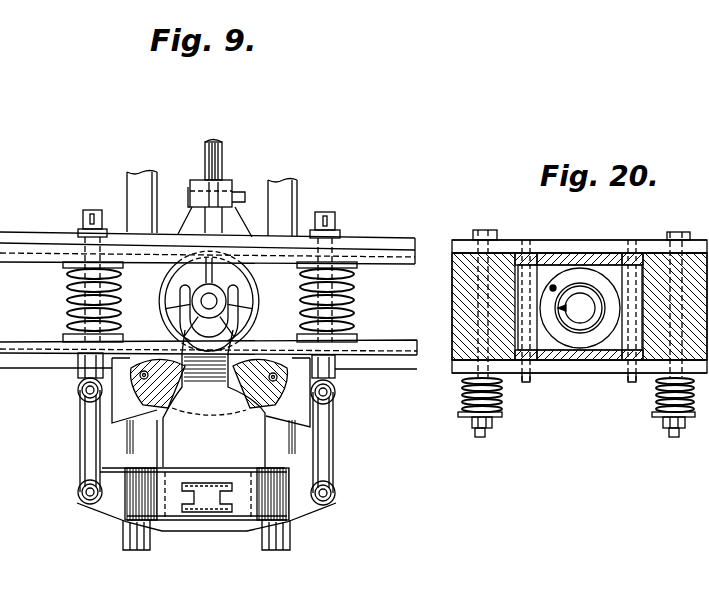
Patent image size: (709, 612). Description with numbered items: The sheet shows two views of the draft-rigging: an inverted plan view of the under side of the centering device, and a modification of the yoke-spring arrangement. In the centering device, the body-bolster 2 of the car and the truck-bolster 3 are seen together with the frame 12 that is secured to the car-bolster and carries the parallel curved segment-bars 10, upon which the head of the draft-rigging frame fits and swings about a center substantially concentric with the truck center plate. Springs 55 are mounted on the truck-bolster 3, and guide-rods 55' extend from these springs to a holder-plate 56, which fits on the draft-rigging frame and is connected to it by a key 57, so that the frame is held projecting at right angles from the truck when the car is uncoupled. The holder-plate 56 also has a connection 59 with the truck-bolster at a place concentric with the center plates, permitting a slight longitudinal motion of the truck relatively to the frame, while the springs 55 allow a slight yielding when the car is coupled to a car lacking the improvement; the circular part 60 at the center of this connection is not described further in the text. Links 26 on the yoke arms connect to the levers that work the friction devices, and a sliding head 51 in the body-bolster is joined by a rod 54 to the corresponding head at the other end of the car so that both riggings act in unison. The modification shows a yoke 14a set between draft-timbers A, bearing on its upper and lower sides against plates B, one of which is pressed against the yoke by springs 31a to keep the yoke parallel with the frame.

In FIG. 9, the sliding head 51 is at (183, 226).
In FIG. 9, the rod 54 is at (222, 163).
In FIG. 9, the spring 55 is at (209, 276).
In FIG. 9, the cam wheel 60 is at (213, 301).
In FIG. 9, the connection 59 is at (240, 307).
In FIG. 9, the holder-plate 56 is at (211, 398).
In FIG. 9, the frame 12 is at (125, 403).
In FIG. 9, the segment-bar 10 is at (290, 386).
In FIG. 9, the guide-rod 55' is at (211, 429).
In FIG. 9, the body-bolster 2 is at (206, 506).
In FIG. 9, the link 26 is at (290, 538).
In FIG. 9, the key 57 is at (212, 498).
In FIG. 9, the truck-bolster 3 is at (378, 301).
In FIG. 20, the draft-timber A is at (452, 302).
In FIG. 20, the yoke 14a is at (577, 258).
In FIG. 20, the plate B is at (547, 244).
In FIG. 20, the spring 31a is at (500, 395).